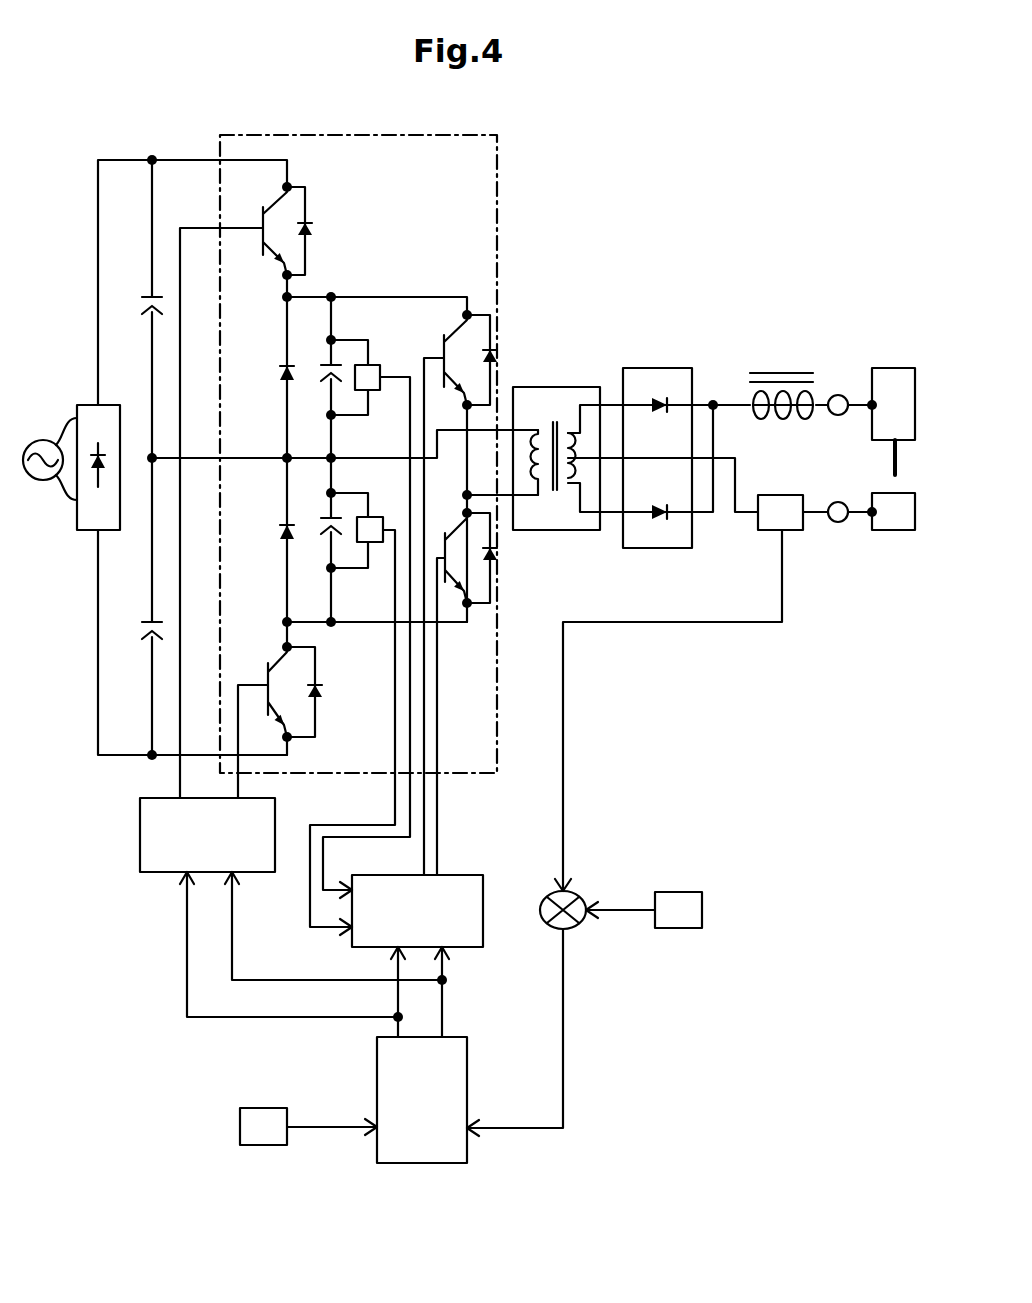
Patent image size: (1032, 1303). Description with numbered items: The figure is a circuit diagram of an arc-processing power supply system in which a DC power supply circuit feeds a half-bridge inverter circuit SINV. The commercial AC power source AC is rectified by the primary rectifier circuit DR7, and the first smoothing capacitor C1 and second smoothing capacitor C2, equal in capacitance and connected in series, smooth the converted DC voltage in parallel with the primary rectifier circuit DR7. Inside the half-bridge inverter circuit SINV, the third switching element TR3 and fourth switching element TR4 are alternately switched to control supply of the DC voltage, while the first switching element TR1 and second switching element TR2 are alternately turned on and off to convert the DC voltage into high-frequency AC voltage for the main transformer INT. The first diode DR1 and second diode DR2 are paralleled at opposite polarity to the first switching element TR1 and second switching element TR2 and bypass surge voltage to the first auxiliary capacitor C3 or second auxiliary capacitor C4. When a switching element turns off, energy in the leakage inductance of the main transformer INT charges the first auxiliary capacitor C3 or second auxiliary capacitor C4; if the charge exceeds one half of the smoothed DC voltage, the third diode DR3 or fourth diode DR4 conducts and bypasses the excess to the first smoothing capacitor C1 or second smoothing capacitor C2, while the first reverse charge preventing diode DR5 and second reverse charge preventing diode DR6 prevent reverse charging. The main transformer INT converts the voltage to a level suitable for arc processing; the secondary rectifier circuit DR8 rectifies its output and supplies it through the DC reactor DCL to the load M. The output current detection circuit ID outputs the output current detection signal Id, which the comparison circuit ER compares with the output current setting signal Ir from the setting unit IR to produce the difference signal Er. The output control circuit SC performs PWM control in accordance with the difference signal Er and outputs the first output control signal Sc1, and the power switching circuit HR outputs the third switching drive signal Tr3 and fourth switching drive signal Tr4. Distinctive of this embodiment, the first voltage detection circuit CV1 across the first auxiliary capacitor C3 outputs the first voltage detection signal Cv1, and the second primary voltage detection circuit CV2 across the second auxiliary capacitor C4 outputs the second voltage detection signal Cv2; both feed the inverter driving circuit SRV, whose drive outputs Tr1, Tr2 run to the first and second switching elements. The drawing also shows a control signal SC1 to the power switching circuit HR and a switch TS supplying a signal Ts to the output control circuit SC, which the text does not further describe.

The half-bridge inverter circuit SINV is at (358, 438).
The third switching element TR3 is at (256, 230).
The third diode DR3 is at (321, 231).
The third switching drive signal Tr3 is at (221, 513).
The first smoothing capacitor C1 is at (139, 309).
The first reverse charge preventing diode DR5 is at (259, 369).
The first auxiliary capacitor C3 is at (319, 377).
The first voltage detection circuit CV1 is at (357, 364).
The first voltage detection signal Cv1 is at (366, 637).
The first switching element TR1 is at (440, 360).
The first diode DR1 is at (506, 360).
The transistor drive signal Tr1 is at (440, 616).
The main transformer INT is at (568, 445).
The secondary rectifier circuit DR8 is at (670, 443).
The DC reactor DCL is at (770, 378).
The motor / load M is at (871, 466).
The output current detection circuit ID is at (698, 494).
The output current detection signal Id is at (668, 710).
The primary rectifier circuit DR7 is at (80, 452).
The commercial AC power source AC is at (50, 467).
The second reverse charge preventing diode DR6 is at (260, 542).
The second auxiliary capacitor C4 is at (320, 542).
The second primary voltage detection circuit CV2 is at (359, 515).
The second voltage detection signal Cv2 is at (348, 746).
The second switching element TR2 is at (477, 513).
The second diode DR2 is at (507, 558).
The transistor drive signal Tr2 is at (456, 716).
The second smoothing capacitor C2 is at (141, 606).
The fourth switching element TR4 is at (259, 688).
The fourth diode DR4 is at (324, 692).
The fourth switching drive signal Tr4 is at (229, 741).
The power switching circuit HR is at (207, 835).
The inverter driving circuit SRV is at (417, 911).
The output control circuit SC is at (422, 1100).
The control signal SC1 is at (292, 954).
The first output control signal Sc1 is at (355, 954).
The torch switch TS is at (263, 1107).
The torch switch signal Ts is at (332, 1116).
The comparison circuit ER is at (544, 910).
The current reference IR is at (678, 894).
The output current setting signal Ir is at (620, 896).
The difference signal Er is at (515, 1032).